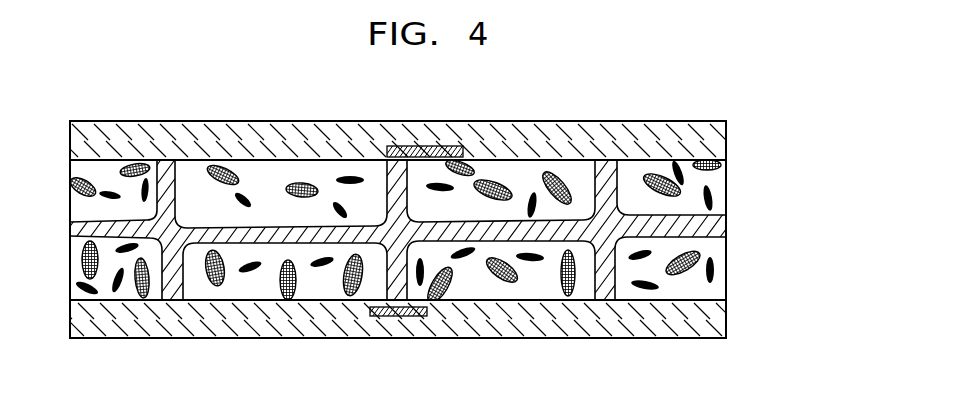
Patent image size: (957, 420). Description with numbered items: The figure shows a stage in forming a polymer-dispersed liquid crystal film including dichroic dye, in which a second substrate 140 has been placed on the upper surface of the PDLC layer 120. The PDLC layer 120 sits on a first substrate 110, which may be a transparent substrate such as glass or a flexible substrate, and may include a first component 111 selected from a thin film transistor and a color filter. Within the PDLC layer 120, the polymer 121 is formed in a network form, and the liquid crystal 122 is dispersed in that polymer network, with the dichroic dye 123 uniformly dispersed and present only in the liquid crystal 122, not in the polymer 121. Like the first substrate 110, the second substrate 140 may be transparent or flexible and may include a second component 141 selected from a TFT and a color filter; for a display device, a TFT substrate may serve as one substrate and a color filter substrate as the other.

The first substrate 110 is at (726, 318).
The first component 111 is at (398, 316).
The PDLC layer 120 is at (808, 217).
The polymer 121 is at (726, 222).
The liquid crystal 122 is at (722, 250).
The dichroic dye 123 is at (715, 272).
The second substrate 140 is at (726, 141).
The second component 141 is at (424, 146).